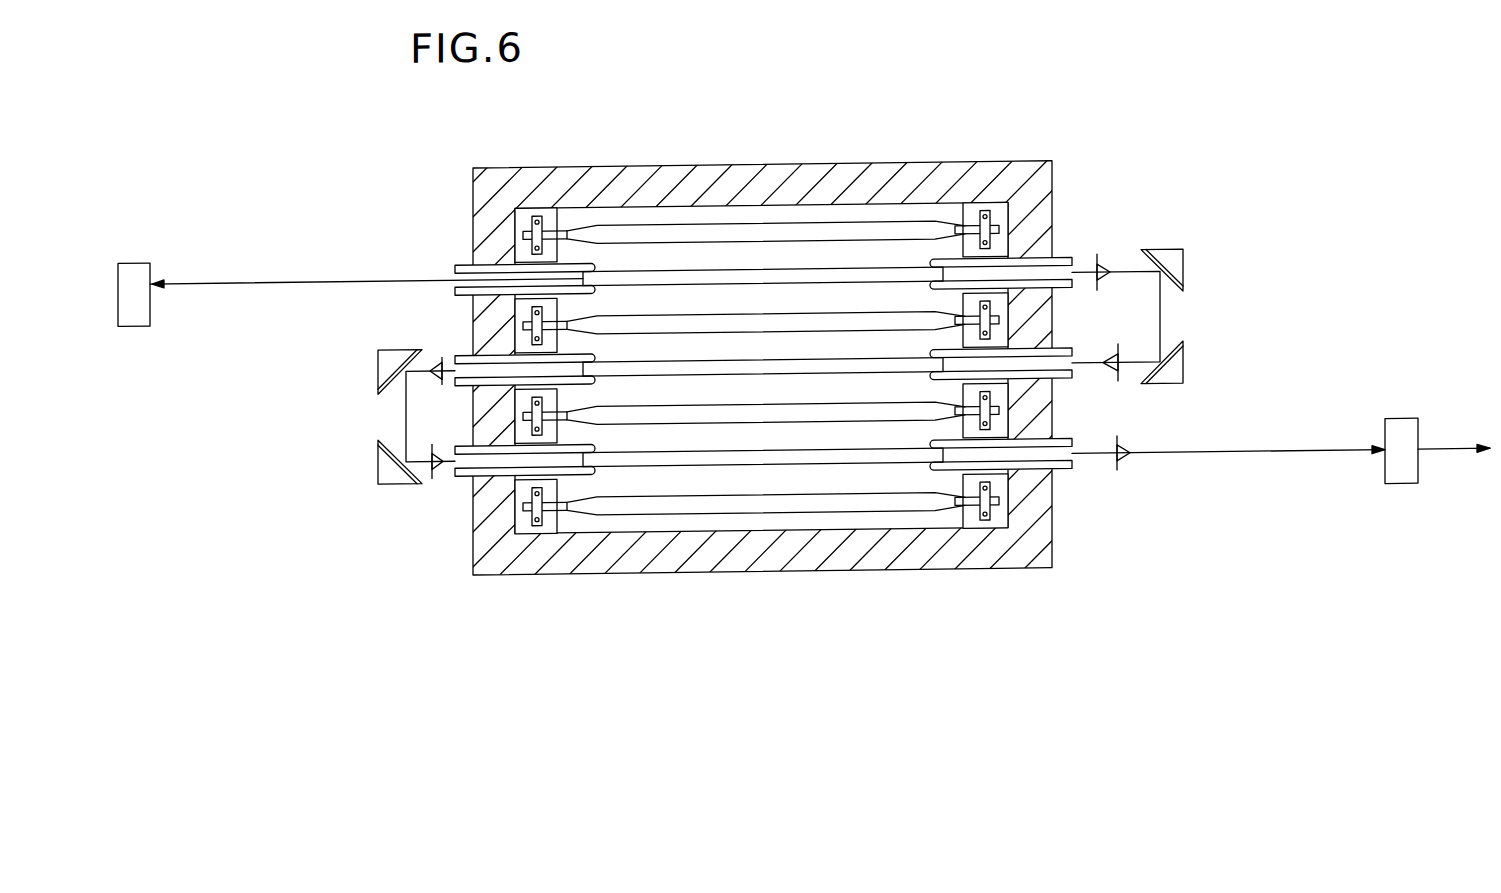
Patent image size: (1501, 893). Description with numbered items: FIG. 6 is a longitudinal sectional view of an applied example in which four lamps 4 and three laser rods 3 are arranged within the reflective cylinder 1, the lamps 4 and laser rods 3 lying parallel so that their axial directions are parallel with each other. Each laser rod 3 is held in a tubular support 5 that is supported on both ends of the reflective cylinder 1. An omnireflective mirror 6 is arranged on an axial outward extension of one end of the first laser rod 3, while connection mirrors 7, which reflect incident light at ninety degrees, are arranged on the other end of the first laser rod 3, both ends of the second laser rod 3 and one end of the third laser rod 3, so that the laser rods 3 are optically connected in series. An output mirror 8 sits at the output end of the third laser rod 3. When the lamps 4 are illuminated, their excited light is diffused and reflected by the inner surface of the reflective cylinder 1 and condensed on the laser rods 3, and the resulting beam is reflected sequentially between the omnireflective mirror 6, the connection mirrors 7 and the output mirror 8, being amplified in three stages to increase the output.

The reflective cylinder 1 is at (905, 180).
The laser rod 3 is at (803, 280).
The lamp 4 is at (678, 231).
The tubular support 5 is at (455, 265).
The omnireflective mirror 6 is at (150, 258).
The connection mirror 7 is at (378, 371).
The output mirror 8 is at (1385, 495).